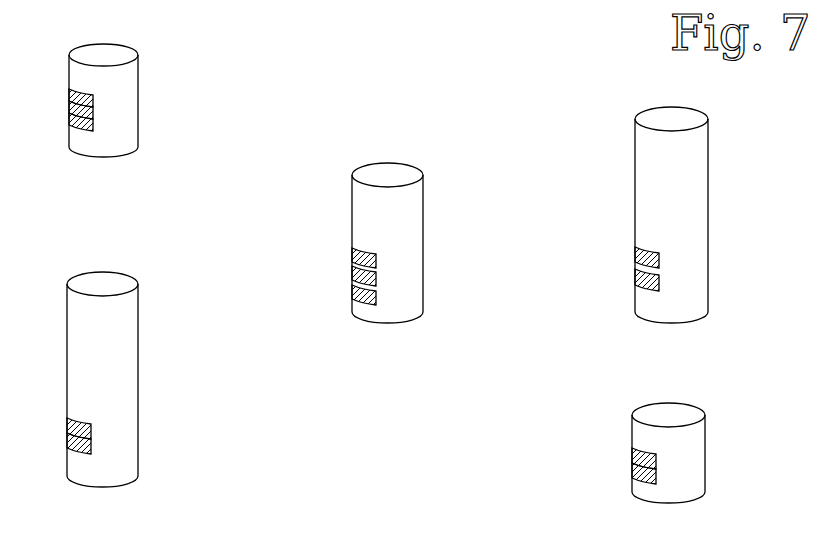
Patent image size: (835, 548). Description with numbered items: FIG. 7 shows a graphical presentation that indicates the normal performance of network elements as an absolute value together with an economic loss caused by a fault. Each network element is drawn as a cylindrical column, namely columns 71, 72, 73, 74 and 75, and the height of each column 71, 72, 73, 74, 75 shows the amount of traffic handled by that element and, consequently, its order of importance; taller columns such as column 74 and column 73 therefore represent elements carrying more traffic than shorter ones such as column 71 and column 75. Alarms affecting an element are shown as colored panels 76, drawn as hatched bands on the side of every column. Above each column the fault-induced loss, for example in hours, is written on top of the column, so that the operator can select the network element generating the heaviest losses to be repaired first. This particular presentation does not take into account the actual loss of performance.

The column 71 is at (128, 83).
The column 72 is at (412, 250).
The column 73 is at (697, 248).
The column 74 is at (125, 413).
The column 75 is at (693, 442).
The colored panel 76 is at (69, 102).